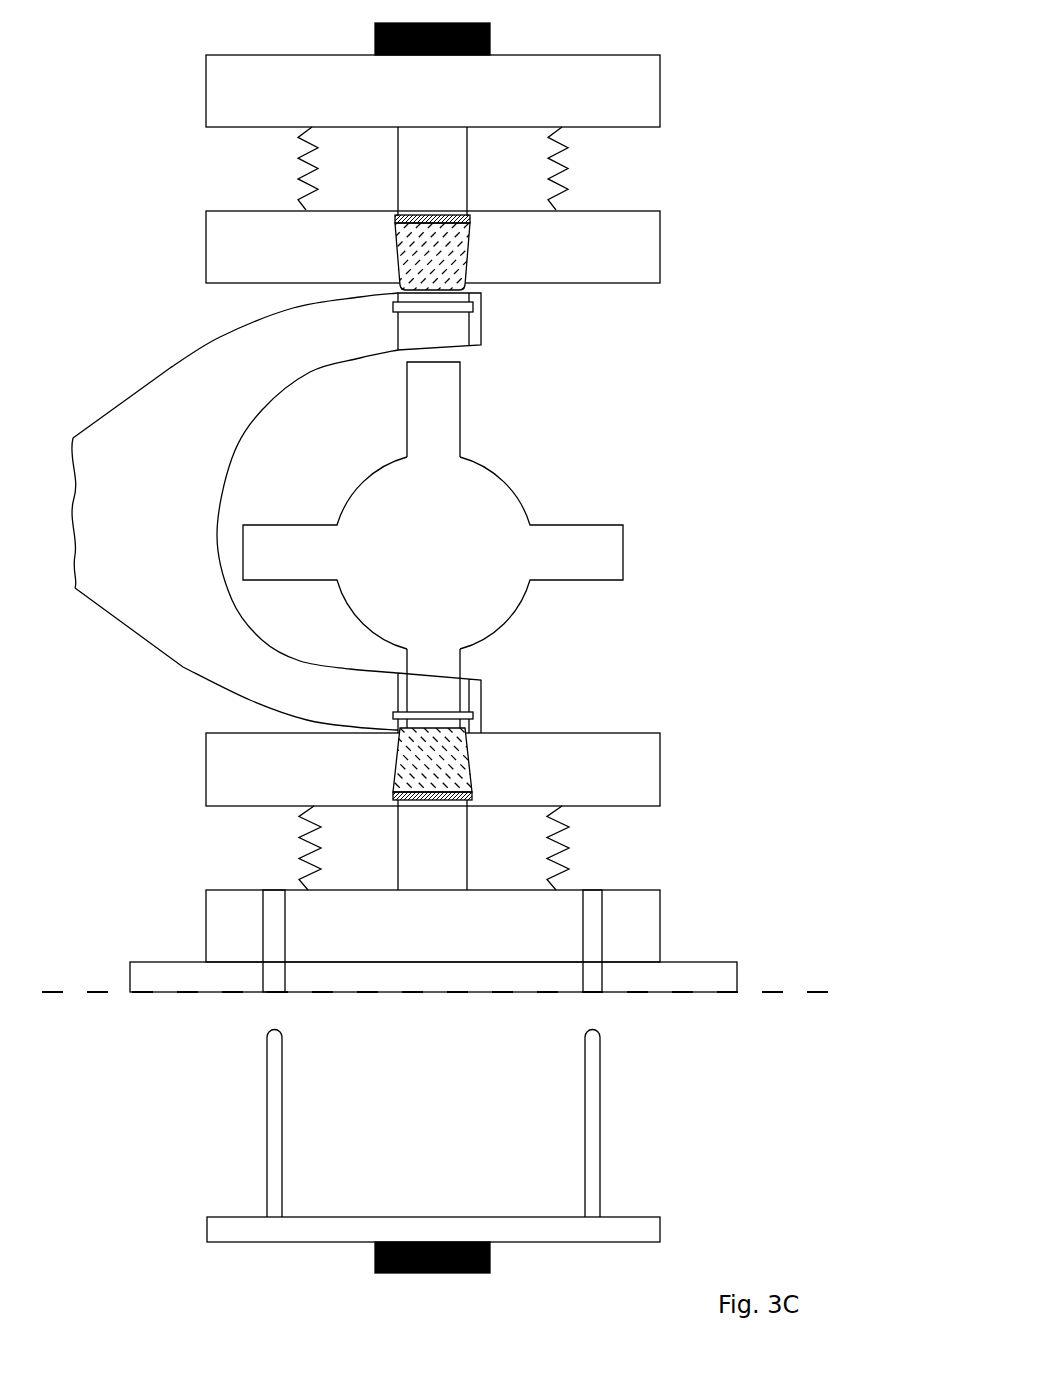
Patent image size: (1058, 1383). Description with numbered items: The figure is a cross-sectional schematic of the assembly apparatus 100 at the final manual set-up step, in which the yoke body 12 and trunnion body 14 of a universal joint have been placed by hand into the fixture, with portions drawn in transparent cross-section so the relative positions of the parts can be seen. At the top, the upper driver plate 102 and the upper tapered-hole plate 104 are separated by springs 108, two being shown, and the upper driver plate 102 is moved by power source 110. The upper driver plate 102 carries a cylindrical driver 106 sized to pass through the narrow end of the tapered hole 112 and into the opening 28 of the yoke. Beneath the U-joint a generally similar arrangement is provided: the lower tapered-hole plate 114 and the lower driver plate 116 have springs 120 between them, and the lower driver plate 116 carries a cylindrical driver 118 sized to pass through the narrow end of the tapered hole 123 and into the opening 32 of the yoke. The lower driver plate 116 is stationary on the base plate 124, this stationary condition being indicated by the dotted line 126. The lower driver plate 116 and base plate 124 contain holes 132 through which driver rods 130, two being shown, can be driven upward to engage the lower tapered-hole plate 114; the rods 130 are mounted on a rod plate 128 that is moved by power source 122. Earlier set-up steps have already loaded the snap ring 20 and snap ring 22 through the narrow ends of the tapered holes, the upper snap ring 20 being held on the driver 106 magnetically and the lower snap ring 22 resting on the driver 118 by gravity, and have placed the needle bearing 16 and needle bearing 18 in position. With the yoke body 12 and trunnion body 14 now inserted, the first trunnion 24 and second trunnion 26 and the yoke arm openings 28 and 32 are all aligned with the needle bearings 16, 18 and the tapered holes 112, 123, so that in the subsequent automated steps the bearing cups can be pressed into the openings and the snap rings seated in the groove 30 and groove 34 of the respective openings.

The apparatus 100 is at (733, 355).
The upper driver plate 102 is at (591, 98).
The upper tapered-hole plate 104 is at (598, 267).
The driver 106 is at (408, 179).
The springs 108 is at (297, 167).
The power source 110 is at (490, 28).
The tapered hole 112 is at (393, 240).
The lower tapered-hole plate 114 is at (598, 788).
The lower driver plate 116 is at (606, 942).
The driver 118 is at (408, 858).
The springs 120 is at (298, 860).
The power source 122 is at (490, 1267).
The tapered hole 123 is at (393, 780).
The base plate 124 is at (712, 967).
The dotted line 126 is at (793, 990).
The rod plate 128 is at (643, 1233).
The driver rods 130 is at (263, 1073).
The holes 132 is at (263, 913).
The yoke body 12 is at (135, 495).
The trunnion body 14 is at (379, 530).
The needle bearing 16 is at (443, 263).
The needle bearing 18 is at (447, 770).
The snap ring 20 is at (443, 215).
The snap ring 22 is at (467, 792).
The first trunnion 24 is at (437, 417).
The second trunnion 26 is at (447, 663).
The opening 28 is at (393, 332).
The groove 30 is at (468, 310).
The opening 32 is at (398, 693).
The groove 34 is at (462, 713).